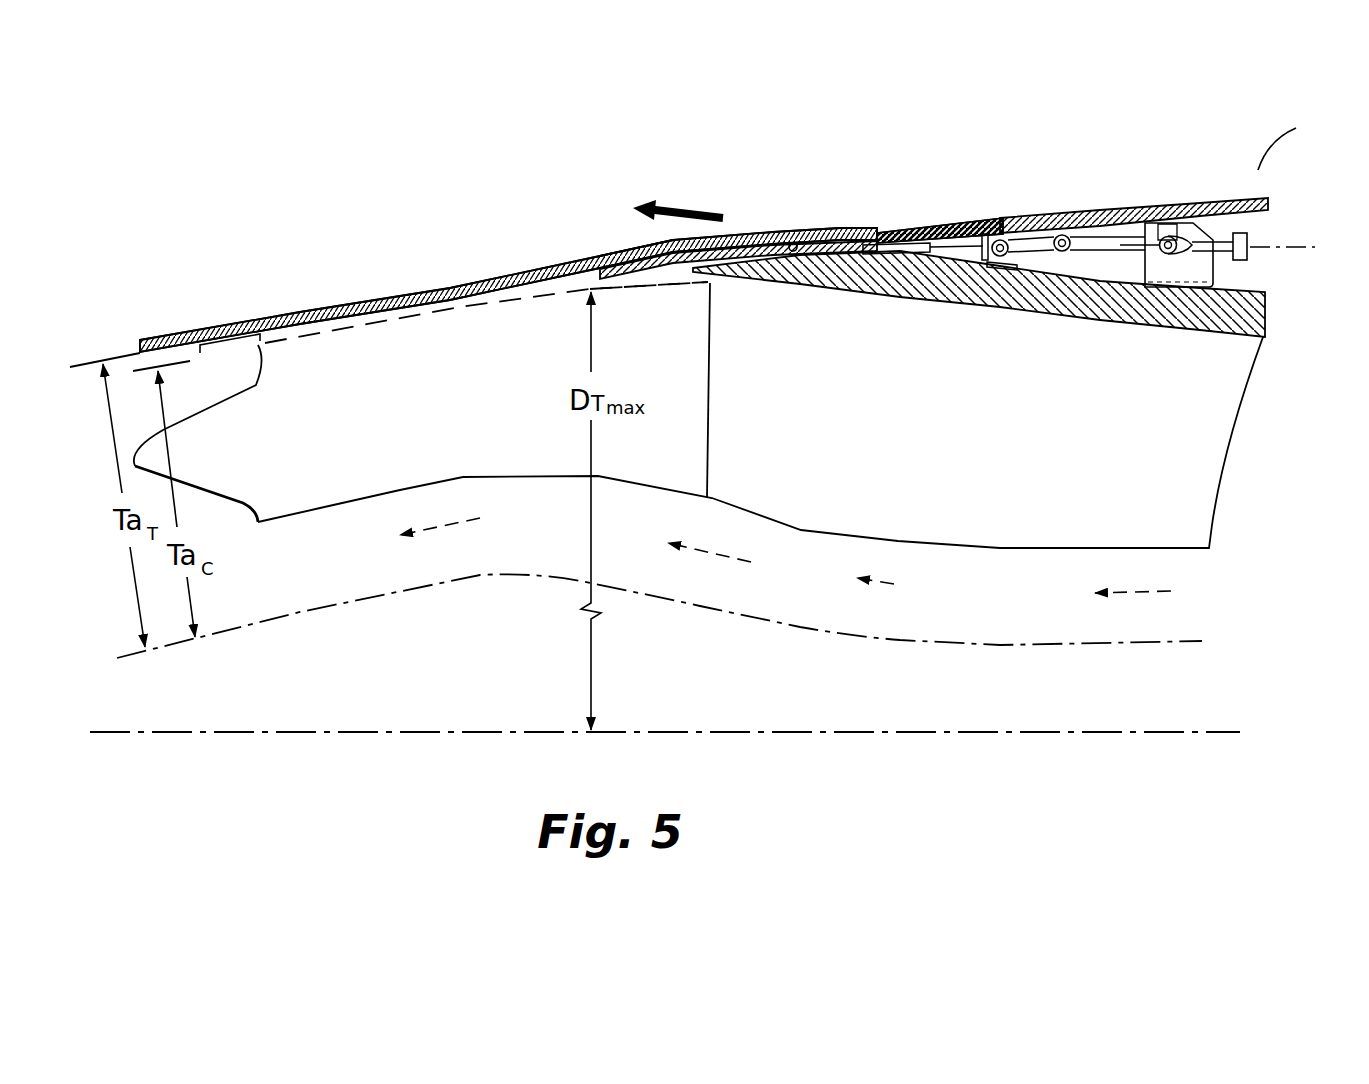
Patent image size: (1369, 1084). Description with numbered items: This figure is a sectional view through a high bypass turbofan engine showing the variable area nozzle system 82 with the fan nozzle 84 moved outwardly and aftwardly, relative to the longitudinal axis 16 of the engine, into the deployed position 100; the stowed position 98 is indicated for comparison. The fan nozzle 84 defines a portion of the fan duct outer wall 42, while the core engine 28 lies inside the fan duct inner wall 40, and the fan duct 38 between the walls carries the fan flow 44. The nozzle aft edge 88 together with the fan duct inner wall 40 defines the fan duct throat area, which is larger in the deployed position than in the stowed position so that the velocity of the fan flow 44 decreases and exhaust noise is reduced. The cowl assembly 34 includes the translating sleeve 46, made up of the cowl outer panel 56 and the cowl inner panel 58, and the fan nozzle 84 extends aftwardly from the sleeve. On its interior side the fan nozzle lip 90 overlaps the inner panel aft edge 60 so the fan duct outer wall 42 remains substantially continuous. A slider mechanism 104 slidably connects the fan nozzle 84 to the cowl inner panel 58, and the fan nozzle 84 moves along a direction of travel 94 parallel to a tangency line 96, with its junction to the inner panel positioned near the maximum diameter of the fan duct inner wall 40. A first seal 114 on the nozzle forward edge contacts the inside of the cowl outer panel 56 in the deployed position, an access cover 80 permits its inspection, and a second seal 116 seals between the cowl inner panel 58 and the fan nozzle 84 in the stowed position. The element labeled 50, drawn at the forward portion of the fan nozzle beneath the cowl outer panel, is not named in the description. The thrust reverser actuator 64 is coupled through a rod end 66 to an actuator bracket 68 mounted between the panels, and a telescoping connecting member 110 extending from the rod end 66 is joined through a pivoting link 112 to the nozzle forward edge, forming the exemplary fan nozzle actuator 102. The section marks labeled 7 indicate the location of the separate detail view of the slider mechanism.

The longitudinal axis 16 is at (1220, 738).
The core engine 28 is at (812, 685).
The cowl assembly 34 is at (1258, 170).
The translating sleeve 46 is at (1277, 149).
The fan duct 38 is at (1023, 604).
The fan duct inner wall 40 is at (1240, 642).
The fan duct outer wall 42 is at (447, 290).
The fan flow 44 is at (1150, 593).
The variable area fan nozzle flap 50 is at (845, 230).
The cowl outer panel 56 is at (1097, 212).
The cowl inner panel 58 is at (1081, 323).
The inner panel aft edge 60 is at (688, 240).
The thrust reverser actuator 64 is at (1245, 235).
The rod end 66 is at (1172, 240).
The actuator bracket 68 is at (1215, 275).
The access cover 80 is at (957, 227).
The variable area nozzle system 82 is at (153, 222).
The fan nozzle 84 is at (348, 296).
The nozzle aft edge 88 is at (140, 346).
The fan nozzle lip 90 is at (688, 280).
The direction of travel 94 is at (690, 208).
The tangency line 96 is at (908, 262).
The stowed position 98 is at (394, 322).
The deployed position 100 is at (508, 290).
The fan nozzle actuator 102 is at (1163, 238).
The slider mechanism 104 is at (950, 262).
The connecting member 110 is at (1105, 255).
The link 112 is at (1030, 258).
The first seal 114 is at (923, 232).
The second seal 116 is at (776, 232).
The section line for FIG. 7 is at (898, 230).